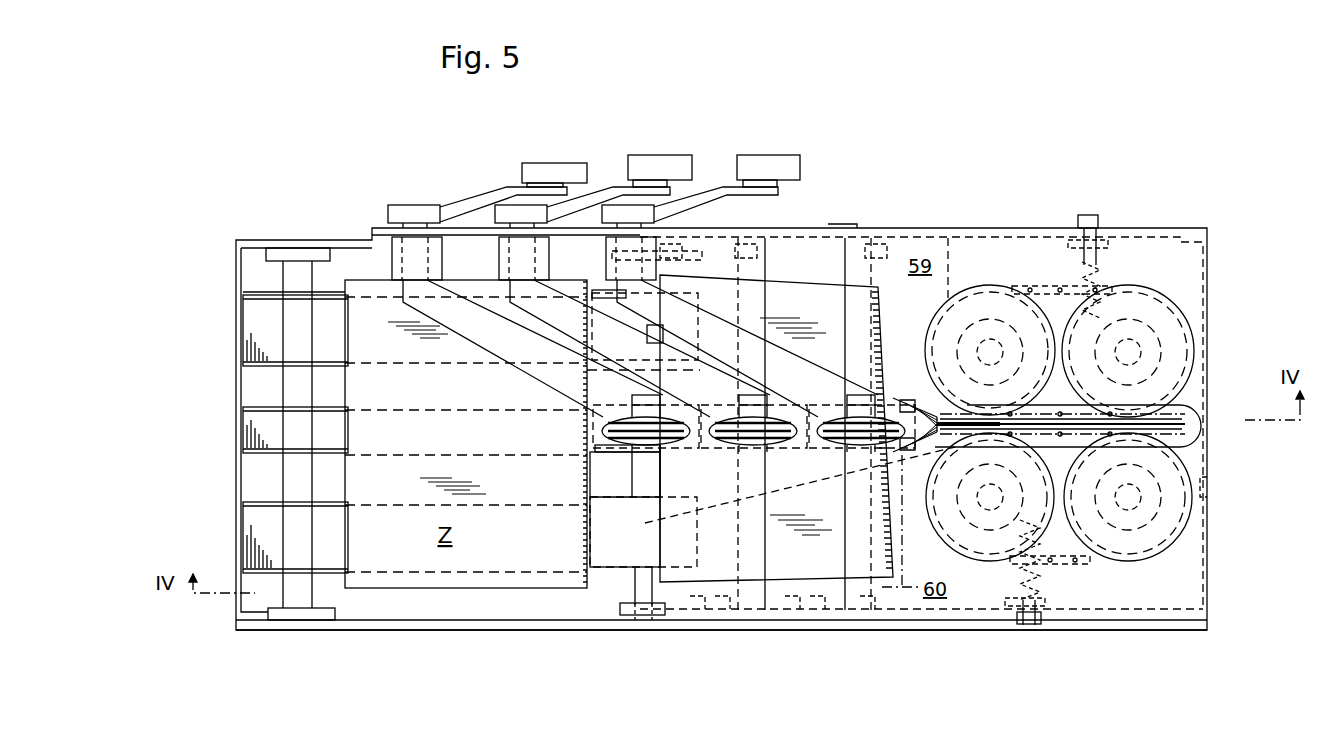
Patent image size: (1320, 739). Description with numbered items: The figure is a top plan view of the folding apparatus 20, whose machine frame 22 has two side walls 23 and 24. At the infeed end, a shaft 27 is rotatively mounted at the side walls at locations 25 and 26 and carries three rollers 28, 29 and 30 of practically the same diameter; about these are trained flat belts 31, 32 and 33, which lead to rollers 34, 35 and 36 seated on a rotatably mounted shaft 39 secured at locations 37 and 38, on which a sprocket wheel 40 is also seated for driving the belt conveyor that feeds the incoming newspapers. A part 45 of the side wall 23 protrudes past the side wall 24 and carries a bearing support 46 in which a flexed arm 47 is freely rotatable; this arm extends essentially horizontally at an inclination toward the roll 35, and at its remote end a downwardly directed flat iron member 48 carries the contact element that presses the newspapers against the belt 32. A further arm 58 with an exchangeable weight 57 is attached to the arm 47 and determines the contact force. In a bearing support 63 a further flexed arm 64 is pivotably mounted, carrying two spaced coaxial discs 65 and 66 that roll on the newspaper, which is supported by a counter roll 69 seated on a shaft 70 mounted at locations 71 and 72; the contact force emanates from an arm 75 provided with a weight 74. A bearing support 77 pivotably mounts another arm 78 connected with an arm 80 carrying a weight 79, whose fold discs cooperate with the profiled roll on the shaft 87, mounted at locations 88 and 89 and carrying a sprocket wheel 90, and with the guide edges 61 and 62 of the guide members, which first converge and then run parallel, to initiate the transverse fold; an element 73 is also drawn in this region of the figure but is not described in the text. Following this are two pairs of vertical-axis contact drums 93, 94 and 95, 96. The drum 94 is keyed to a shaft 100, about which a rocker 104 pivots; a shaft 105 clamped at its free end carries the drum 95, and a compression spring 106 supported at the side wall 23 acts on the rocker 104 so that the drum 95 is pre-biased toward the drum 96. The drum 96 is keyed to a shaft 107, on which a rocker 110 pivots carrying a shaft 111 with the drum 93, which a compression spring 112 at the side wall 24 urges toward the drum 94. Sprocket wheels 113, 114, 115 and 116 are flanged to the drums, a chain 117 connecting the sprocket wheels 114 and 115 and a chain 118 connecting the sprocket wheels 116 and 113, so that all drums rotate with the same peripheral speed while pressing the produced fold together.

The apparatus 20 is at (932, 160).
The machine frame 22 is at (992, 226).
The side wall 23 is at (335, 247).
The side wall 24 is at (430, 627).
The mounting location 25 is at (292, 248).
The mounting location 26 is at (275, 620).
The shaft 27 is at (307, 597).
The roller 28 is at (327, 292).
The roller 29 is at (252, 398).
The roller 30 is at (257, 497).
The flat belt 31 is at (245, 332).
The flat belt 32 is at (257, 433).
The flat belt 33 is at (257, 540).
The roller 34 is at (600, 290).
The roller 35 is at (600, 455).
The roller 36 is at (610, 567).
The mounting location 37 is at (672, 250).
The mounting location 38 is at (623, 620).
The shaft 39 is at (633, 592).
The sprocket wheel 40 is at (613, 377).
The protruding part of side wall 45 is at (827, 225).
The bearing support 46 is at (382, 240).
The flexed arm 47 is at (473, 337).
The flat iron member 48 is at (600, 432).
The weight 57 is at (550, 170).
The arm 58 is at (467, 203).
The guide edge 61 is at (938, 418).
The guide edge 62 is at (895, 535).
The bearing support 63 is at (488, 248).
The flexed arm 64 is at (568, 315).
The disc 65 is at (780, 415).
The disc 66 is at (747, 450).
The counter roll 69 is at (773, 447).
The shaft 70 is at (788, 592).
The mounting location 71 is at (777, 245).
The mounting location 72 is at (773, 630).
The guide block 73 is at (773, 353).
The weight 74 is at (662, 160).
The arm 75 is at (600, 195).
The bearing support 77 is at (632, 258).
The arm 78 is at (707, 323).
The weight 79 is at (783, 162).
The arm 80 is at (730, 187).
The shaft 87 is at (857, 540).
The mounting location 88 is at (893, 223).
The mounting location 89 is at (880, 628).
The sprocket wheel 90 is at (860, 357).
The contact drum 93 is at (977, 580).
The contact drum 94 is at (972, 288).
The contact drum 95 is at (1170, 300).
The contact drum 96 is at (1212, 480).
The shaft 100 is at (983, 350).
The rocker 104 is at (1055, 330).
The shaft 105 is at (1143, 343).
The compression spring 106 is at (1093, 267).
The shaft 107 is at (1147, 482).
The rocker 110 is at (1062, 527).
The shaft 111 is at (983, 530).
The compression spring 112 is at (1020, 573).
The sprocket wheel 113 is at (930, 523).
The sprocket wheel 114 is at (945, 240).
The sprocket wheel 115 is at (1212, 260).
The sprocket wheel 116 is at (1185, 525).
The chain 117 is at (1030, 300).
The chain 118 is at (1080, 563).